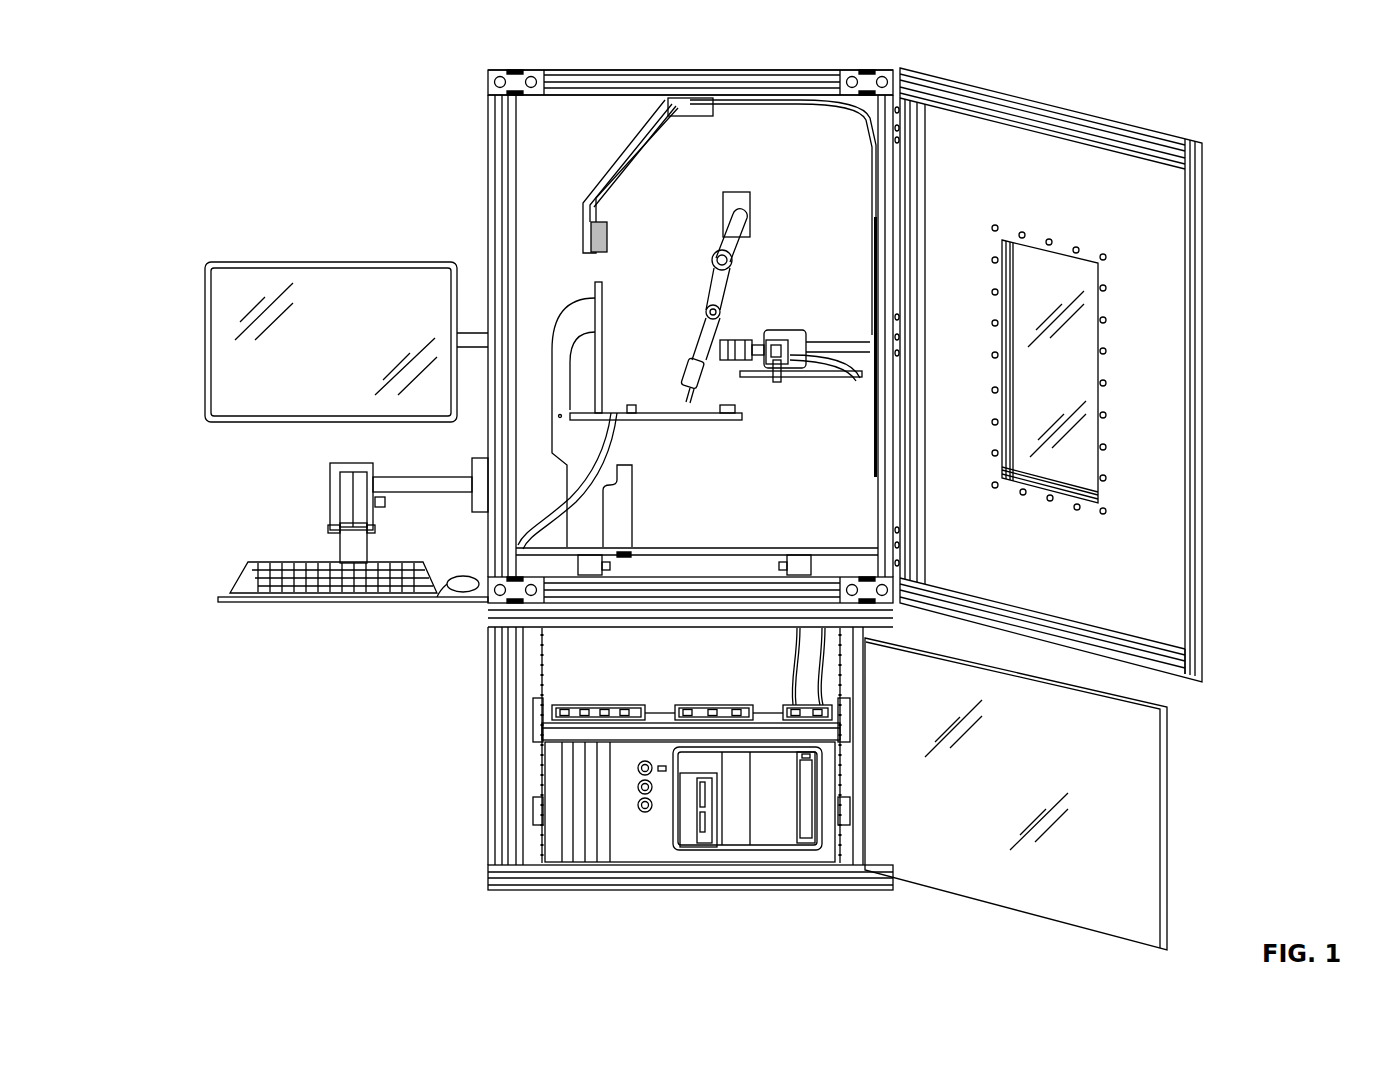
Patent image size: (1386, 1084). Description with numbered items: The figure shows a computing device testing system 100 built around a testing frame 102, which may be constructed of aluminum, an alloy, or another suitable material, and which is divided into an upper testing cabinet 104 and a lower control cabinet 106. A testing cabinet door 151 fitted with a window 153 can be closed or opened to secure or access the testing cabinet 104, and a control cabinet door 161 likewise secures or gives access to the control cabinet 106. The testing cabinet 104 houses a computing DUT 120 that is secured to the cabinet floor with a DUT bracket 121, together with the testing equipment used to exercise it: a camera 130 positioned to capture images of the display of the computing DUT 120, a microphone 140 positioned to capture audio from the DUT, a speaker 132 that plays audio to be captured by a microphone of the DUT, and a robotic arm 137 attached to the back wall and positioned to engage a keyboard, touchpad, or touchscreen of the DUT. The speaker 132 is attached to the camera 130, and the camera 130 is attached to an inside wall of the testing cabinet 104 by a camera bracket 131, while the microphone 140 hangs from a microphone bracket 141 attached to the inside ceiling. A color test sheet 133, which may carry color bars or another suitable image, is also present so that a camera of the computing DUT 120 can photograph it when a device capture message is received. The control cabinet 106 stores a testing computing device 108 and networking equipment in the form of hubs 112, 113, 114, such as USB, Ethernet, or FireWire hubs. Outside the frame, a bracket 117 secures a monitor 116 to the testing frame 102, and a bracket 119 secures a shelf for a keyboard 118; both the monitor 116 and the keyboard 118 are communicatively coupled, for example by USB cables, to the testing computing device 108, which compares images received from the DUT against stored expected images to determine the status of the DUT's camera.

The testing system 100 is at (221, 123).
The testing frame 102 is at (740, 70).
The testing cabinet 104 is at (498, 137).
The control cabinet 106 is at (562, 634).
The testing computing device 108 is at (770, 850).
The hub 112 is at (600, 705).
The hub 113 is at (723, 705).
The hub 114 is at (790, 705).
The monitor 116 is at (366, 280).
The bracket 117 is at (481, 337).
The keyboard 118 is at (238, 568).
The bracket 119 is at (444, 477).
The computing DUT 120 is at (604, 305).
The DUT bracket 121 is at (620, 505).
The camera 130 is at (734, 340).
The camera bracket 131 is at (858, 342).
The speaker 132 is at (762, 378).
The color test sheet 133 is at (872, 235).
The robotic arm 137 is at (722, 238).
The microphone 140 is at (610, 236).
The microphone bracket 141 is at (638, 130).
The testing cabinet door 151 is at (1152, 190).
The window 153 is at (1080, 370).
The control cabinet door 161 is at (1144, 795).